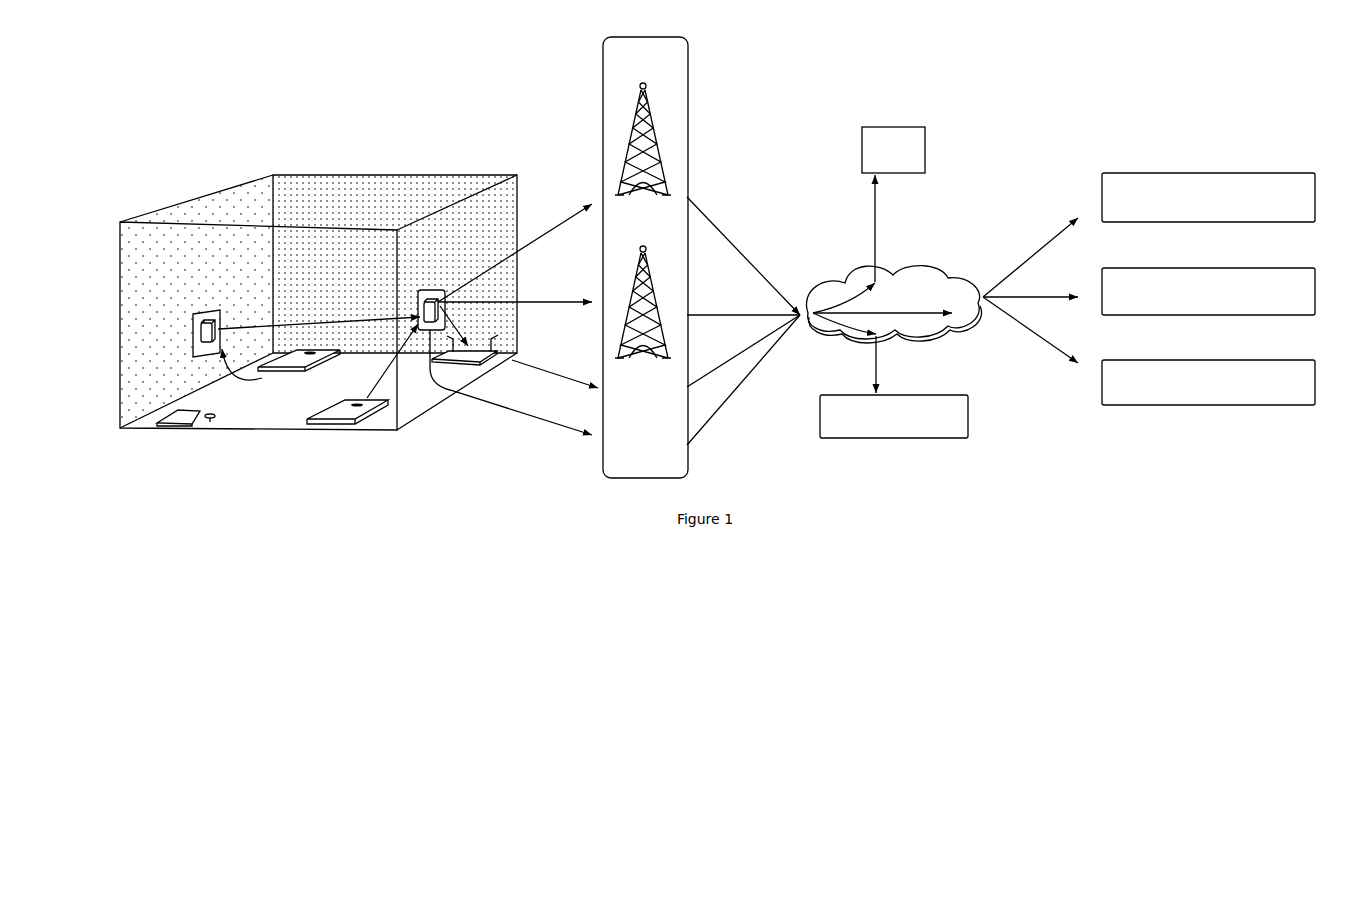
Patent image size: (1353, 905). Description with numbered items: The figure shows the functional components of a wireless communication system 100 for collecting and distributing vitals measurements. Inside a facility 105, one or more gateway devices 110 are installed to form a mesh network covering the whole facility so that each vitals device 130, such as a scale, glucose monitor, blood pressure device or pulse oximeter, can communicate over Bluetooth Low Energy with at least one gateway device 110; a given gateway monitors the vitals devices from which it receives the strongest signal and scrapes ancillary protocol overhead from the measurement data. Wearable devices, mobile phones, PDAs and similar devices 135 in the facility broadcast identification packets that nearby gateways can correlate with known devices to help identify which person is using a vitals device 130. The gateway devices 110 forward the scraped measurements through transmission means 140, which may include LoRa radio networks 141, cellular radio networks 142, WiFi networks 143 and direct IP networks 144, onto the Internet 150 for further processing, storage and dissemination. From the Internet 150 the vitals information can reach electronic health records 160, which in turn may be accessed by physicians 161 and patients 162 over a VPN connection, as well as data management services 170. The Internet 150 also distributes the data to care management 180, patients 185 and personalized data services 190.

The wireless communication system 100 is at (717, 267).
The facility 105 is at (318, 292).
The gateway device 110 is at (207, 314).
The vitals device 130 is at (294, 350).
The devices 135 is at (208, 422).
The transmission means 140 is at (645, 242).
The radio networks 141 is at (643, 128).
The cellular radio networks 142 is at (643, 291).
The WiFi networks 143 is at (645, 398).
The direct IP networks 144 is at (645, 445).
The Internet 150 is at (893, 304).
The electronic health records 160 is at (893, 150).
The physicians 161 is at (862, 127).
The patients 162 is at (925, 127).
The data management services 170 is at (894, 416).
The care management 180 is at (1208, 197).
The patients 185 is at (1208, 291).
The personalized data services 190 is at (1208, 382).